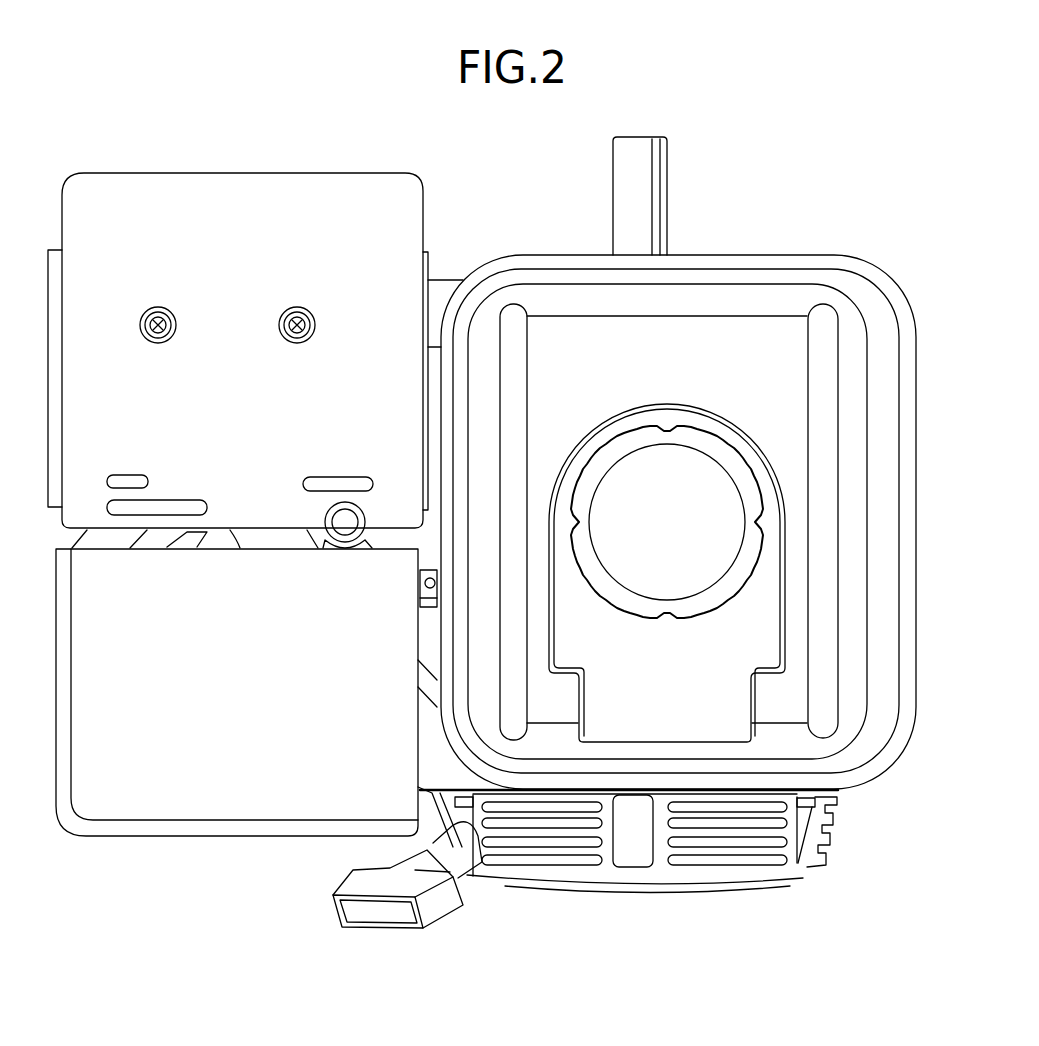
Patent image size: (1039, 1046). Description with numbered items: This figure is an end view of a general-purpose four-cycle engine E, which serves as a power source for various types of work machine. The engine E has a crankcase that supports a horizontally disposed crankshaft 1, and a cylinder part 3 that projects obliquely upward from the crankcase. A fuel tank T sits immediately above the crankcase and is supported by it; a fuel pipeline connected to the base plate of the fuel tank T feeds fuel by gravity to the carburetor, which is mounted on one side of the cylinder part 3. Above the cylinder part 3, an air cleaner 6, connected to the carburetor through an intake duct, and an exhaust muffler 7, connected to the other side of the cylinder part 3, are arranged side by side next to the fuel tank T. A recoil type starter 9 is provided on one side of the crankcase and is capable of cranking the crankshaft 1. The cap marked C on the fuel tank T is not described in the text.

The crankshaft 1 is at (660, 205).
The cylinder part 3 is at (822, 523).
The air cleaner 6 is at (219, 686).
The exhaust muffler 7 is at (222, 374).
The recoil type starter 9 is at (347, 887).
The fuel cap C is at (665, 452).
The fuel tank T is at (750, 380).
The general-purpose 4-cycle engine E is at (842, 808).